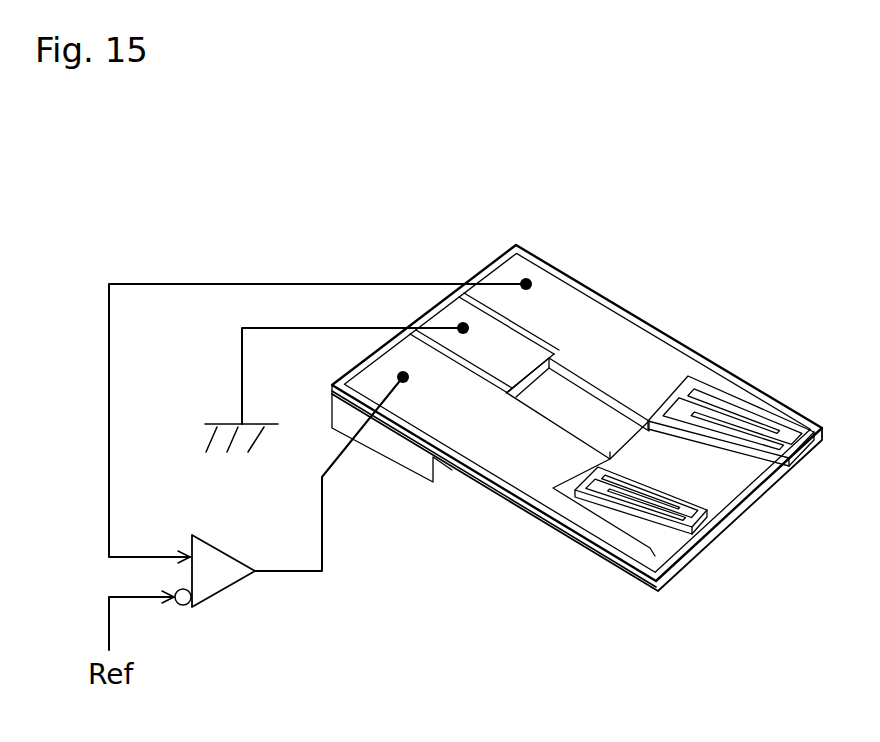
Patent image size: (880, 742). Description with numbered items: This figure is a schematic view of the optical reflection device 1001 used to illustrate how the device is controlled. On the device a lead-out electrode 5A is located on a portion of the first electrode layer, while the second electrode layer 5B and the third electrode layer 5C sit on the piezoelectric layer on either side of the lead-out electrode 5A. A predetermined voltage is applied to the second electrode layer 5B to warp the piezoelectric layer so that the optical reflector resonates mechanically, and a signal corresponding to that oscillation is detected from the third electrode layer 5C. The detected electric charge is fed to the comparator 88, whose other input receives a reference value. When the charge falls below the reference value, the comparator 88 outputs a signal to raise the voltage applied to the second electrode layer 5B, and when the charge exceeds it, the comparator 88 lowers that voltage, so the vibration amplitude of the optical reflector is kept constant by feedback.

The optical reflection device 1001 is at (715, 365).
The lead-out electrode 5A is at (483, 347).
The second electrode layer 5B is at (517, 465).
The third electrode layer 5C is at (642, 350).
The comparator 88 is at (223, 590).